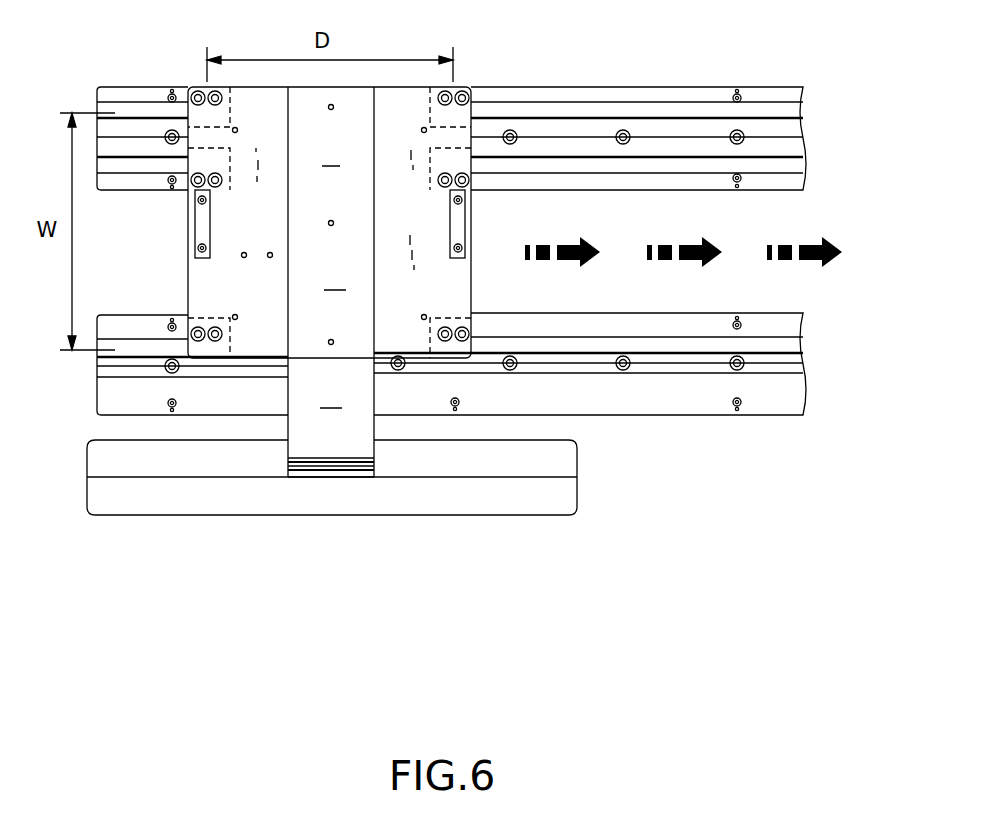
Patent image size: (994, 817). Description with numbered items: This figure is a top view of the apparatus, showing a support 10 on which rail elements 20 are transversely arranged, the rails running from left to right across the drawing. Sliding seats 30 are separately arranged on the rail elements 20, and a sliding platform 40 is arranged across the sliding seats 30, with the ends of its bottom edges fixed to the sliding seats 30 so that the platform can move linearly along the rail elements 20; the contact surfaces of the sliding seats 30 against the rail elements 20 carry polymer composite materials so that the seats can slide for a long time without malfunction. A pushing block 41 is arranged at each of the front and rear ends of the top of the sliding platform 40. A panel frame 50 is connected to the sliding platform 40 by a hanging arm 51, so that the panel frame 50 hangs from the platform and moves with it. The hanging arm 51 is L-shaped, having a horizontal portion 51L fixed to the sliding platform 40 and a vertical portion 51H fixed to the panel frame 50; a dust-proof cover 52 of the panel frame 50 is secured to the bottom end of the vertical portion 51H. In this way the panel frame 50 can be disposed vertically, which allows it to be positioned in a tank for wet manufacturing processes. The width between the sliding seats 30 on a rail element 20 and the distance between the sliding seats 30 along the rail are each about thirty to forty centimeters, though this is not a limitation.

The support 10 is at (768, 97).
The rail element 20 is at (690, 165).
The sliding seat 30 is at (205, 112).
The sliding platform 40 is at (418, 161).
The pushing block 41 is at (202, 223).
The panel frame 50 is at (358, 367).
The hanging arm 51 is at (272, 367).
The horizontal portion 51L is at (306, 387).
The vertical portion 51H is at (308, 472).
The dust-proof cover 52 is at (414, 500).